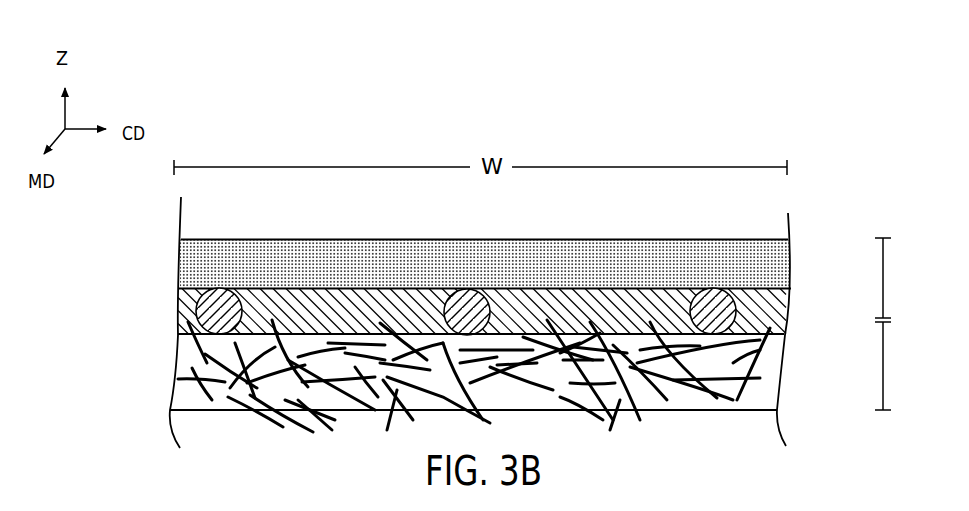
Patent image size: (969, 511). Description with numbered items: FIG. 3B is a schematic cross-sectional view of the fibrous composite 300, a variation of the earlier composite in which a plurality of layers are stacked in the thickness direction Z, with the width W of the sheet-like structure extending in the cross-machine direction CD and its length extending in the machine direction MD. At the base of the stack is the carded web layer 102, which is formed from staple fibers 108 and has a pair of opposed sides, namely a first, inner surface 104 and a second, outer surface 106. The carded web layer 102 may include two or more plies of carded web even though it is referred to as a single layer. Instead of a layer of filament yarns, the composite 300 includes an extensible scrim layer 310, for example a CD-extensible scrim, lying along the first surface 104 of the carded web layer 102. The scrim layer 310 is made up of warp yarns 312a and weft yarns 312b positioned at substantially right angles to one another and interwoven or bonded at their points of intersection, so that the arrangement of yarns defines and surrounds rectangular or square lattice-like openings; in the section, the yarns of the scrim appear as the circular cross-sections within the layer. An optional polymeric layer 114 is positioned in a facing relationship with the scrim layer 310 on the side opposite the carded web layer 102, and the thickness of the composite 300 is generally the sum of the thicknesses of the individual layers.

The composite 300 is at (846, 141).
The carded web layer 102 is at (174, 370).
The first surface 104 is at (555, 334).
The second surface 106 is at (738, 412).
The staple fibers 108 is at (752, 370).
The polymeric layer 114 is at (176, 263).
The extensible scrim layer 310 is at (176, 308).
The warp yarns 312a is at (722, 320).
The weft yarns 312b is at (778, 296).